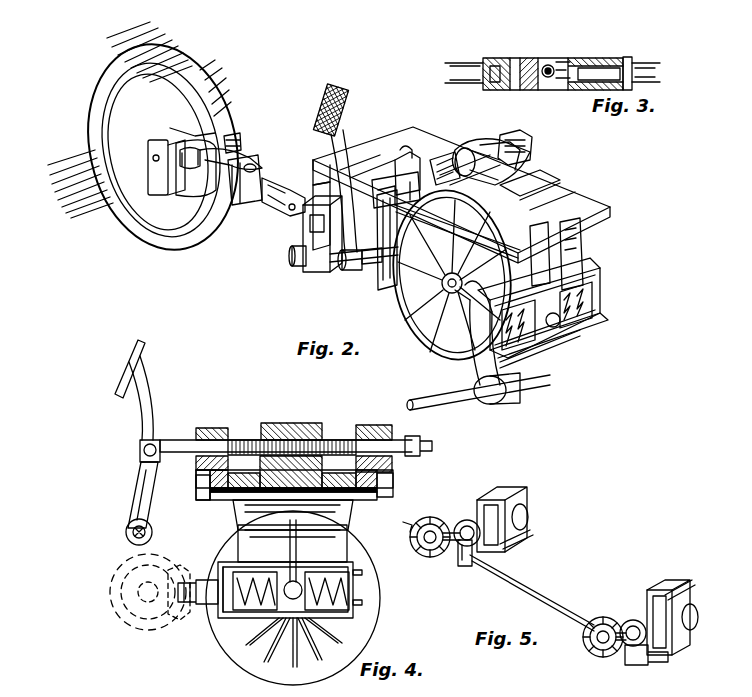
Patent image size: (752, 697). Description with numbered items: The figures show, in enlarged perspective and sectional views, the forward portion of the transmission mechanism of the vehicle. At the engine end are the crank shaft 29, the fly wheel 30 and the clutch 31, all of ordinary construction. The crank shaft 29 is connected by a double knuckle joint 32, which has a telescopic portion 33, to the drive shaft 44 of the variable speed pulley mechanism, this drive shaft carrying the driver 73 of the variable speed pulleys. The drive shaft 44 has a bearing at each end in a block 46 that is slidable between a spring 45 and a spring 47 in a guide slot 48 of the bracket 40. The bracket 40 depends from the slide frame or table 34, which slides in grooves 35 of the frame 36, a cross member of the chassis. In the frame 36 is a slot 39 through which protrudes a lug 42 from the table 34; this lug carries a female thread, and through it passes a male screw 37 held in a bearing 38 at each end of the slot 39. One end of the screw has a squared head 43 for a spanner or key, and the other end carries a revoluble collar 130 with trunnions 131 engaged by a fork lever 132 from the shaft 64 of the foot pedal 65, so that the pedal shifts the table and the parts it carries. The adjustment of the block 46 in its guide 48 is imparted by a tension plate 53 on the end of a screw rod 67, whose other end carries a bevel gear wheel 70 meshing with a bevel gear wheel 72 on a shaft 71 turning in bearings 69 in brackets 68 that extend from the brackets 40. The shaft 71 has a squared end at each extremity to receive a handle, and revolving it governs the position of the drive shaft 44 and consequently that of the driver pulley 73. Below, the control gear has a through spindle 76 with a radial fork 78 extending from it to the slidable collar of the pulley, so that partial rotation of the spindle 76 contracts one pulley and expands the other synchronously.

In FIG. 2, the crank shaft 29 is at (228, 197).
In FIG. 3, the crank shaft 29 is at (466, 68).
In FIG. 2, the fly wheel 30 is at (152, 143).
In FIG. 2, the clutch 31 is at (186, 140).
In FIG. 2, the double knuckle joint 32 is at (248, 205).
In FIG. 3, the double knuckle joint 32 is at (530, 60).
In FIG. 2, the telescopic portion 33 is at (303, 216).
In FIG. 3, the telescopic portion 33 is at (588, 60).
In FIG. 2, the slide frame or table 34 is at (490, 236).
In FIG. 4, the slide frame or table 34 is at (352, 502).
In FIG. 4, the grooves 35 is at (394, 478).
In FIG. 2, the frame 36 is at (461, 195).
In FIG. 2, the male screw 37 is at (445, 160).
In FIG. 4, the male screw 37 is at (327, 440).
In FIG. 2, the bearing 38 is at (517, 135).
In FIG. 4, the bearing 38 is at (218, 428).
In FIG. 2, the slot 39 is at (541, 184).
In FIG. 4, the slot 39 is at (215, 490).
In FIG. 2, the bracket 40 is at (333, 158).
In FIG. 4, the bracket 40 is at (280, 525).
In FIG. 2, the lug 42 is at (470, 160).
In FIG. 4, the lug 42 is at (290, 423).
In FIG. 4, the squared head 43 is at (432, 447).
In FIG. 2, the drive shaft 44 is at (592, 328).
In FIG. 3, the drive shaft 44 is at (652, 67).
In FIG. 4, the drive shaft 44 is at (256, 573).
In FIG. 2, the spring 45 is at (598, 281).
In FIG. 4, the spring 45 is at (340, 586).
In FIG. 2, the block 46 is at (306, 268).
In FIG. 4, the block 46 is at (300, 584).
In FIG. 2, the spring 47 is at (540, 350).
In FIG. 4, the spring 47 is at (250, 608).
In FIG. 5, the spring 47 is at (528, 517).
In FIG. 2, the guide slot 48 is at (570, 316).
In FIG. 4, the guide slot 48 is at (355, 610).
In FIG. 2, the tension plate 53 is at (520, 356).
In FIG. 4, the tension plate 53 is at (226, 605).
In FIG. 5, the tension plate 53 is at (535, 545).
In FIG. 2, the shaft 64 is at (342, 268).
In FIG. 4, the shaft 64 is at (126, 530).
In FIG. 2, the foot pedal 65 is at (356, 114).
In FIG. 4, the foot pedal 65 is at (145, 368).
In FIG. 2, the screw rod 67 is at (292, 254).
In FIG. 4, the screw rod 67 is at (200, 570).
In FIG. 5, the bracket 68 is at (512, 548).
In FIG. 5, the bearing 69 is at (466, 568).
In FIG. 5, the bevel gear wheel 70 is at (467, 520).
In FIG. 5, the shaft 71 is at (532, 592).
In FIG. 5, the bevel gear wheel 72 is at (432, 516).
In FIG. 2, the driver pulley 73 is at (452, 275).
In FIG. 4, the driver pulley 73 is at (293, 598).
In FIG. 2, the spindle 76 is at (527, 393).
In FIG. 2, the radial fork 78 is at (478, 372).
In FIG. 2, the revoluble collar 130 is at (440, 215).
In FIG. 2, the trunnions 131 is at (452, 200).
In FIG. 4, the trunnions 131 is at (142, 450).
In FIG. 2, the fork lever 132 is at (368, 276).
In FIG. 4, the fork lever 132 is at (134, 488).